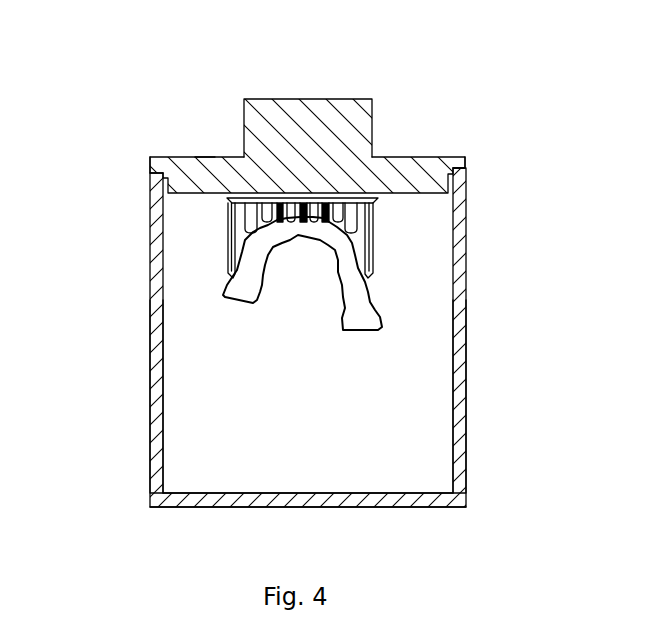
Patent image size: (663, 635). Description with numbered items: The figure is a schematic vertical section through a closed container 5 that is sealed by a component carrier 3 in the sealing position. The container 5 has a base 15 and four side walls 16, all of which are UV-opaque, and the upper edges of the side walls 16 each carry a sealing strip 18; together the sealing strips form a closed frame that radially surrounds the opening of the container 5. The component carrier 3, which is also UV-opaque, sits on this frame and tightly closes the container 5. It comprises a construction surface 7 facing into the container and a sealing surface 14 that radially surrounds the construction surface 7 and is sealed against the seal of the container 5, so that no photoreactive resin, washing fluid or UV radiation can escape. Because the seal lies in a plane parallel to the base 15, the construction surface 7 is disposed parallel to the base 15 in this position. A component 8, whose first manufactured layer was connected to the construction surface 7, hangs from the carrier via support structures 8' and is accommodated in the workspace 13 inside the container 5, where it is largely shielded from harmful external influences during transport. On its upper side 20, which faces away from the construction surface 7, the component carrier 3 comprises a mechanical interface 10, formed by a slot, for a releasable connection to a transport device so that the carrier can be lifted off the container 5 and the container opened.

The component carrier 3 is at (410, 175).
The container 5 is at (465, 227).
The construction surface 7 is at (232, 199).
The component 8 is at (382, 273).
The support structures 8' is at (385, 247).
The mechanical interface 10 is at (333, 122).
The workspace 13 is at (318, 413).
The sealing surface 14 is at (465, 163).
The base 15 is at (180, 498).
The side walls 16 is at (162, 443).
The sealing strip 18 is at (157, 173).
The upper side 20 is at (200, 142).